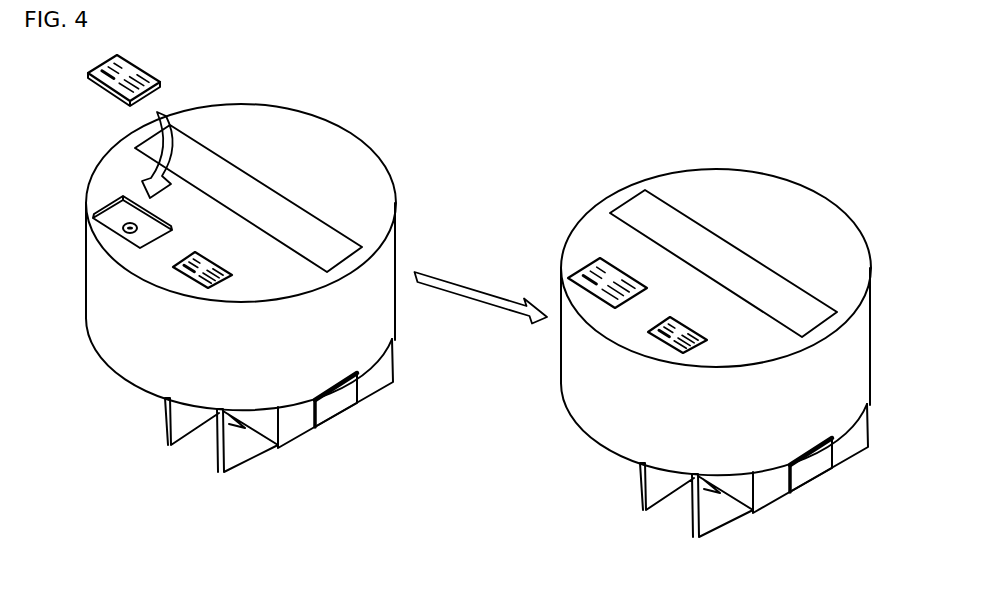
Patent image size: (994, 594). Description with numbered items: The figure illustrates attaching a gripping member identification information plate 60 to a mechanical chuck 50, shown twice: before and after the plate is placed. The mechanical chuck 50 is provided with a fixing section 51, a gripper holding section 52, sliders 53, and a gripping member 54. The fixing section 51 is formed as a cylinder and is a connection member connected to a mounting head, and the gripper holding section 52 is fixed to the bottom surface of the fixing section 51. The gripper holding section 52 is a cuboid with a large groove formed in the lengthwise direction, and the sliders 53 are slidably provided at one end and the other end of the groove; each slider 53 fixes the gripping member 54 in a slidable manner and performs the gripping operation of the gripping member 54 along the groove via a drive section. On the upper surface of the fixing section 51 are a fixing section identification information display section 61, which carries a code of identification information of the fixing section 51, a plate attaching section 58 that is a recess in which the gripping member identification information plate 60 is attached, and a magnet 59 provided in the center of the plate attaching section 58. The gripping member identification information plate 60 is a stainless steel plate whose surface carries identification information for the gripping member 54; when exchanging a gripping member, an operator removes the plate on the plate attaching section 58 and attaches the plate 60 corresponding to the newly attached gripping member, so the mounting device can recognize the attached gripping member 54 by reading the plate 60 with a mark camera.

The mechanical chuck 50 is at (303, 87).
The fixing section 51 is at (346, 129).
The gripper holding section 52 is at (393, 370).
The slider 53 is at (349, 410).
The gripping member 54 is at (167, 432).
The plate attaching section 58 is at (104, 210).
The magnet 59 is at (124, 228).
The gripping member identification information plate 60 is at (141, 69).
The fixing section identification information display section 61 is at (177, 276).